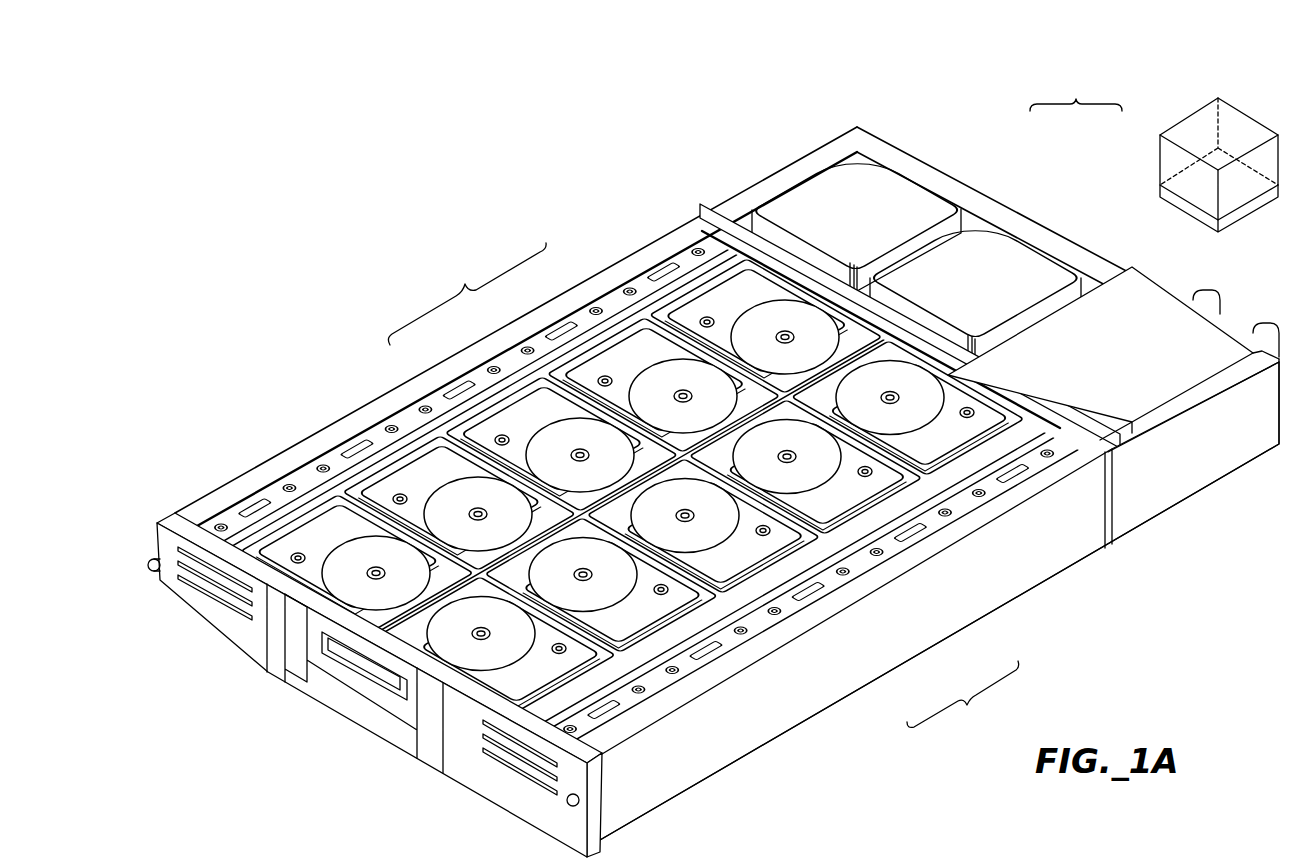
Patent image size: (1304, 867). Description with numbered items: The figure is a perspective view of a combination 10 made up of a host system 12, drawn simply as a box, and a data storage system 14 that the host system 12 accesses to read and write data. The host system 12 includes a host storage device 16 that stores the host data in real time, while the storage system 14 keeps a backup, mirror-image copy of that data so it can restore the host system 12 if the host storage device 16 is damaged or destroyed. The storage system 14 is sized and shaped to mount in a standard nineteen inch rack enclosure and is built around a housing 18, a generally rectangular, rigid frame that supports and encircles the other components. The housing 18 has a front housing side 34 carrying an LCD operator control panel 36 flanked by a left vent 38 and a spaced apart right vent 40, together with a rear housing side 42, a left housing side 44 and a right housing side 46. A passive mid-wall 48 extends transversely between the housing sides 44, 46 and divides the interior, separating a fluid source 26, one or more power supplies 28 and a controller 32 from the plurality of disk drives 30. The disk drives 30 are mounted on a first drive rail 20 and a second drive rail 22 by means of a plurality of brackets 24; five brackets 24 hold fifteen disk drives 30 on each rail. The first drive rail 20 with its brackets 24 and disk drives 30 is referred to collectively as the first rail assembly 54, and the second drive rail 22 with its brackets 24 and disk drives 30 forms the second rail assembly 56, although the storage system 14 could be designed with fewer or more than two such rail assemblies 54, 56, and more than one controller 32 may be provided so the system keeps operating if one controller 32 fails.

The combination 10 is at (1076, 96).
The host system 12 is at (1156, 149).
The data storage system 14 is at (1003, 176).
The host storage device 16 is at (1237, 217).
The housing 18 is at (777, 165).
The first drive rail 20 is at (456, 366).
The second drive rail 22 is at (822, 612).
The brackets 24 is at (530, 370).
The fluid source 26 is at (888, 185).
The power supplies 28 is at (1155, 292).
The disk drives 30 is at (627, 358).
The controller 32 is at (1117, 420).
The front housing side 34 is at (280, 660).
The LCD operator control panel 36 is at (372, 673).
The left vent 38 is at (228, 603).
The right vent 40 is at (503, 765).
The rear housing side 42 is at (1087, 258).
The left housing side 44 is at (352, 418).
The right housing side 46 is at (993, 507).
The passive mid-wall 48 is at (700, 212).
The first rail assembly 54 is at (467, 294).
The second rail assembly 56 is at (963, 697).